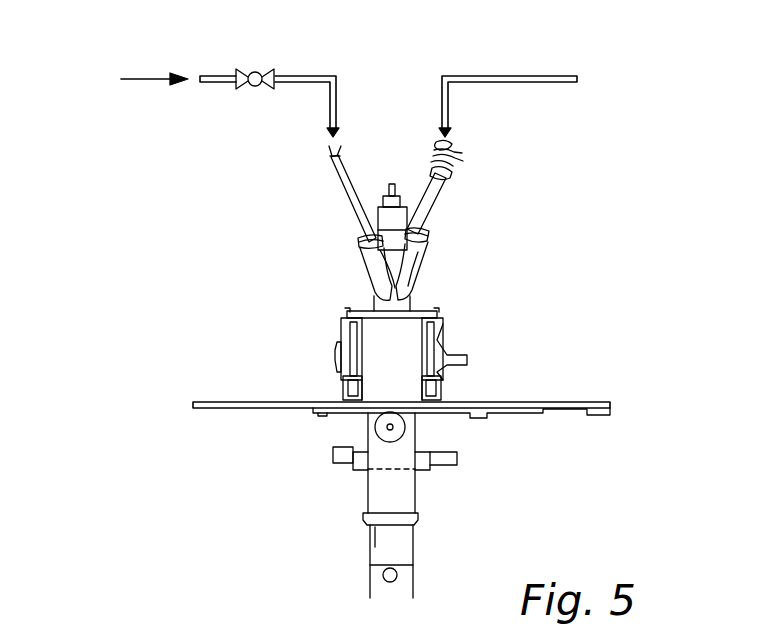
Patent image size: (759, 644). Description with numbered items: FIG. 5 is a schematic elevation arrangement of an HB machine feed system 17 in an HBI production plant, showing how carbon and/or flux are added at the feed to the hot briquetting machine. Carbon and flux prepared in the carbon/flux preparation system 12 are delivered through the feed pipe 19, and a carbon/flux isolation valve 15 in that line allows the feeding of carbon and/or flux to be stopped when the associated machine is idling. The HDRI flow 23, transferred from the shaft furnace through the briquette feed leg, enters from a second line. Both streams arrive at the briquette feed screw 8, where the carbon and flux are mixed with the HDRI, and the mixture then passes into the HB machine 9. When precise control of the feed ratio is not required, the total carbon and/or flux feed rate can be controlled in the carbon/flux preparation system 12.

The carbon/flux preparation system 12 is at (137, 80).
The feed pipe 19 is at (226, 74).
The carbon/flux isolation valve 15 is at (252, 105).
The HDRI flow 23 is at (521, 76).
The briquette feed screw 8 is at (418, 268).
The HB machine 9 is at (482, 340).
The HB machine feed system 17 is at (190, 296).